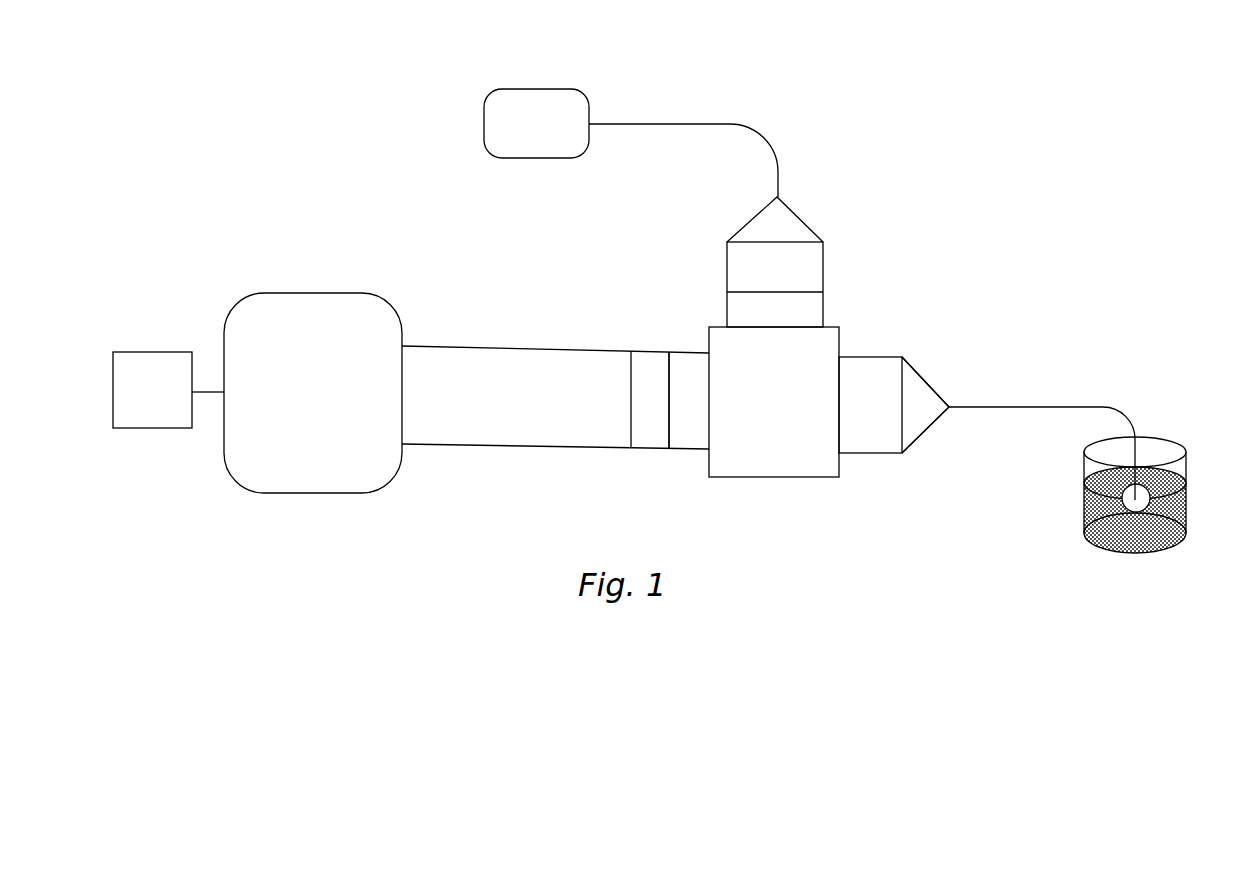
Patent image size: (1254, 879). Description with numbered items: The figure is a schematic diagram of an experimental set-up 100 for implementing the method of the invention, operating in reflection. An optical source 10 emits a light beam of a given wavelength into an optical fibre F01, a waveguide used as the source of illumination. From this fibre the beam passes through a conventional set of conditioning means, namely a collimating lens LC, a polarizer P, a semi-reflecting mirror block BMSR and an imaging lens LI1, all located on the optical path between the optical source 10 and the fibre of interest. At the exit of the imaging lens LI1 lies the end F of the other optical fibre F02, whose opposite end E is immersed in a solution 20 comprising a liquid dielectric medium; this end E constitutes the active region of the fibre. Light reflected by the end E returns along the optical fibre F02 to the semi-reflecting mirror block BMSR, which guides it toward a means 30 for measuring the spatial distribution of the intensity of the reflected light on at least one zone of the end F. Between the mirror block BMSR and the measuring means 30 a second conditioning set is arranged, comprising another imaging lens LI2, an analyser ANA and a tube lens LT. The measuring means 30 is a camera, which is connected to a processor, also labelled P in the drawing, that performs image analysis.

The experimental set-up 100 is at (410, 556).
The optical source 10 is at (536, 85).
The solution 20 is at (1165, 538).
The means for measuring 30 is at (311, 290).
The polarizer P is at (143, 349).
The tube lens LT is at (512, 452).
The analyser ANA is at (642, 346).
The imaging lens LI2 is at (692, 452).
The imaging lens LI1 is at (873, 354).
The collimating lens LC is at (828, 265).
The semi-reflecting mirror block BMSR is at (773, 482).
The optical fibre F01 is at (667, 121).
The optical fibre F02 is at (1042, 441).
The end of the optical fibre FO2 F is at (947, 420).
The end of the optical fibre FO2 E is at (1158, 496).